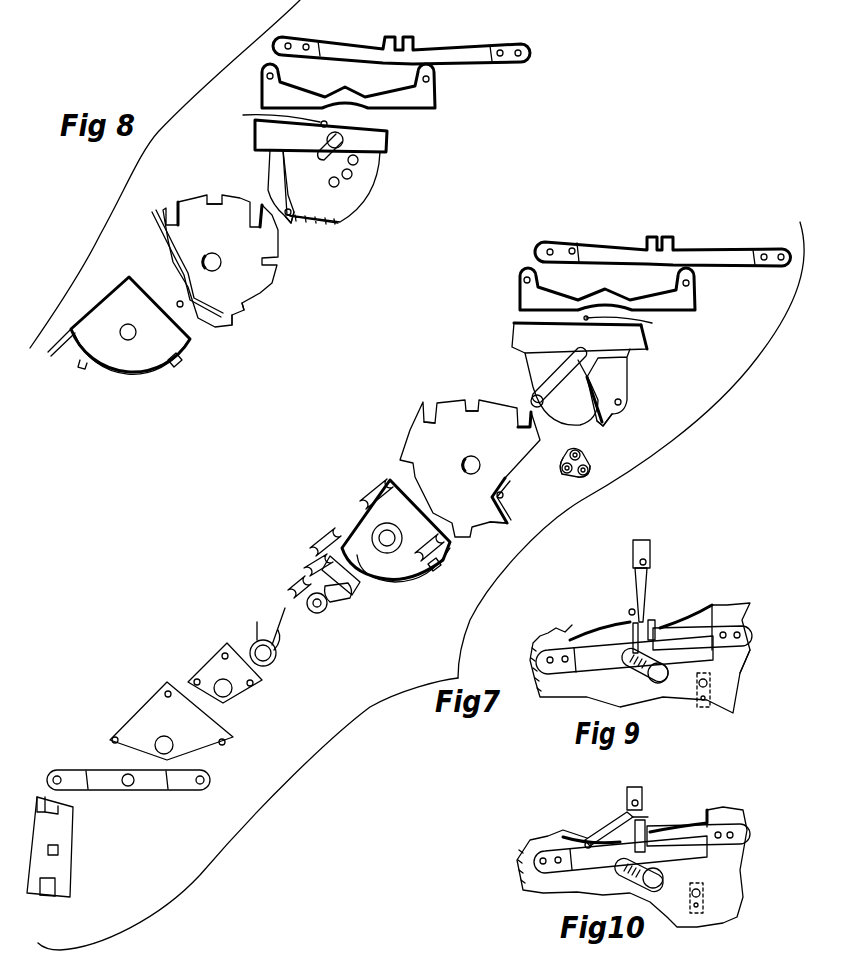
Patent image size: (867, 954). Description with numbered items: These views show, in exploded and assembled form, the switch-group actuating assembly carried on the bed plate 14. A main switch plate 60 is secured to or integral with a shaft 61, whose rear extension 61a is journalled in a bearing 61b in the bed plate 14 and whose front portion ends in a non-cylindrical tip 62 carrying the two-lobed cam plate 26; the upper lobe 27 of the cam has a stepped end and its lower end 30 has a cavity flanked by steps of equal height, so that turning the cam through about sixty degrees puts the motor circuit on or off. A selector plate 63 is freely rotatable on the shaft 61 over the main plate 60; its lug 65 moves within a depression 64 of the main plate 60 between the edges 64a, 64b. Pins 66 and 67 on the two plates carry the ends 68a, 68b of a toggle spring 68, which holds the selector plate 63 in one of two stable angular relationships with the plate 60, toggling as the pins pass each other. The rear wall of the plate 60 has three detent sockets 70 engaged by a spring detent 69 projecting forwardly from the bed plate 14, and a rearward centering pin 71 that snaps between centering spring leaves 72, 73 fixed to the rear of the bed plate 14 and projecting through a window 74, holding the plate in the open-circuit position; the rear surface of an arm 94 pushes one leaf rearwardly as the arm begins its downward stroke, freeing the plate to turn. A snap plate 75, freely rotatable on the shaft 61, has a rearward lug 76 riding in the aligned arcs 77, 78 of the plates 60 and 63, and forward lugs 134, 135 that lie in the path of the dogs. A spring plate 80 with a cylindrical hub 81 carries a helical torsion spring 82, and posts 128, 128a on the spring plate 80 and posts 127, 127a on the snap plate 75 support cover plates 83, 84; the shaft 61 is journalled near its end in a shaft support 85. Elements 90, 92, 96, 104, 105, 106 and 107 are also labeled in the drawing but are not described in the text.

In FIG. 9, the bed plate 14 is at (535, 640).
In FIG. 10, the bed plate 14 is at (745, 856).
In FIG. 7, the two-lobed cam plate 26 is at (82, 888).
In FIG. 7, the upper lobe 27 is at (42, 798).
In FIG. 7, the lower end of cam 30 is at (60, 898).
In FIG. 8, the main switch plate 60 is at (397, 149).
In FIG. 7, the main switch plate 60 is at (505, 345).
In FIG. 8, the shaft 61 is at (275, 193).
In FIG. 7, the shaft 61 is at (566, 372).
In FIG. 8, the rear extension 61a is at (343, 135).
In FIG. 9, the bearing 61b is at (660, 684).
In FIG. 10, the bearing 61b is at (656, 889).
In FIG. 7, the non-cylindrical tip 62 is at (541, 407).
In FIG. 8, the selector plate 63 is at (141, 234).
In FIG. 7, the selector plate 63 is at (403, 421).
In FIG. 9, the selector plate 63 is at (612, 633).
In FIG. 8, the depression 64 is at (291, 224).
In FIG. 7, the depression 64 is at (618, 383).
In FIG. 7, the edge of depression 64a is at (650, 346).
In FIG. 7, the edge of depression 64b is at (603, 428).
In FIG. 8, the lug 65 is at (228, 327).
In FIG. 7, the lug 65 is at (509, 510).
In FIG. 8, the pin 66 is at (290, 242).
In FIG. 7, the pin 66 is at (621, 405).
In FIG. 8, the pin 67 is at (183, 305).
In FIG. 7, the pin 67 is at (512, 494).
In FIG. 7, the toggle spring 68 is at (572, 474).
In FIG. 7, the end of toggle spring 68a is at (589, 468).
In FIG. 7, the end of toggle spring 68b is at (566, 461).
In FIG. 9, the spring detent 69 is at (712, 692).
In FIG. 10, the spring detent 69 is at (705, 898).
In FIG. 8, the detent sockets 70 is at (358, 176).
In FIG. 8, the centering pin 71 is at (272, 113).
In FIG. 7, the centering pin 71 is at (630, 325).
In FIG. 9, the centering pin 71 is at (632, 655).
In FIG. 8, the centering spring leaf 72 is at (432, 49).
In FIG. 7, the centering spring leaf 72 is at (616, 247).
In FIG. 9, the centering spring leaf 72 is at (690, 628).
In FIG. 10, the centering spring leaf 72 is at (690, 826).
In FIG. 8, the centering spring leaf 73 is at (340, 48).
In FIG. 7, the centering spring leaf 73 is at (715, 248).
In FIG. 9, the centering spring leaf 73 is at (585, 658).
In FIG. 10, the centering spring leaf 73 is at (577, 857).
In FIG. 9, the window 74 is at (746, 660).
In FIG. 8, the snap plate 75 is at (119, 387).
In FIG. 7, the snap plate 75 is at (363, 490).
In FIG. 8, the lug 76 is at (177, 365).
In FIG. 8, the arc 77 is at (356, 198).
In FIG. 7, the arc 77 is at (530, 383).
In FIG. 8, the arc 78 is at (262, 281).
In FIG. 7, the arc 78 is at (472, 530).
In FIG. 7, the spring plate 80 is at (300, 564).
In FIG. 7, the cylindrical hub 81 is at (312, 611).
In FIG. 7, the helical torsion spring 82 is at (278, 657).
In FIG. 7, the cover plate 83 is at (214, 652).
In FIG. 7, the cover plate 84 is at (147, 695).
In FIG. 7, the shaft support 85 is at (148, 792).
In FIG. 9, the lever 90 is at (652, 548).
In FIG. 10, the lever 90 is at (643, 790).
In FIG. 9, the pivot hole 92 is at (638, 563).
In FIG. 10, the pivot hole 92 is at (631, 802).
In FIG. 9, the arm 94 is at (648, 585).
In FIG. 10, the arm 94 is at (612, 826).
In FIG. 9, the pin 96 is at (629, 610).
In FIG. 10, the pin 96 is at (585, 841).
In FIG. 8, the notch 104 is at (210, 195).
In FIG. 7, the notch 104 is at (473, 398).
In FIG. 8, the notch 105 is at (255, 205).
In FIG. 7, the notch 105 is at (428, 405).
In FIG. 8, the notch 106 is at (172, 203).
In FIG. 7, the notch 106 is at (518, 410).
In FIG. 8, the bracket 107 is at (437, 97).
In FIG. 7, the bracket 107 is at (697, 283).
In FIG. 9, the bracket 107 is at (660, 627).
In FIG. 10, the bracket 107 is at (655, 830).
In FIG. 7, the post 127 is at (380, 482).
In FIG. 7, the post 127a is at (327, 535).
In FIG. 7, the post 128 is at (312, 562).
In FIG. 7, the post 128a is at (290, 587).
In FIG. 8, the lug 134 is at (78, 364).
In FIG. 7, the lug 134 is at (437, 573).
In FIG. 7, the lug 135 is at (388, 582).